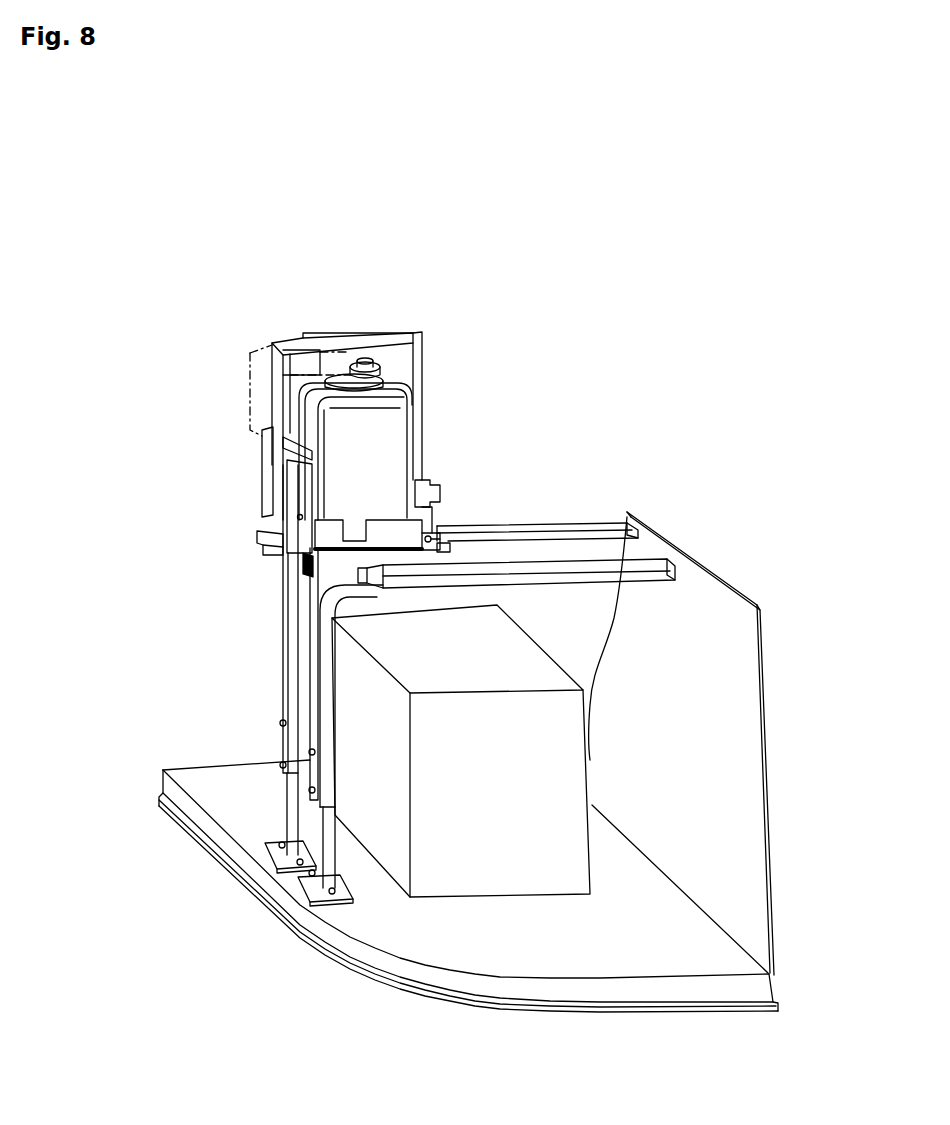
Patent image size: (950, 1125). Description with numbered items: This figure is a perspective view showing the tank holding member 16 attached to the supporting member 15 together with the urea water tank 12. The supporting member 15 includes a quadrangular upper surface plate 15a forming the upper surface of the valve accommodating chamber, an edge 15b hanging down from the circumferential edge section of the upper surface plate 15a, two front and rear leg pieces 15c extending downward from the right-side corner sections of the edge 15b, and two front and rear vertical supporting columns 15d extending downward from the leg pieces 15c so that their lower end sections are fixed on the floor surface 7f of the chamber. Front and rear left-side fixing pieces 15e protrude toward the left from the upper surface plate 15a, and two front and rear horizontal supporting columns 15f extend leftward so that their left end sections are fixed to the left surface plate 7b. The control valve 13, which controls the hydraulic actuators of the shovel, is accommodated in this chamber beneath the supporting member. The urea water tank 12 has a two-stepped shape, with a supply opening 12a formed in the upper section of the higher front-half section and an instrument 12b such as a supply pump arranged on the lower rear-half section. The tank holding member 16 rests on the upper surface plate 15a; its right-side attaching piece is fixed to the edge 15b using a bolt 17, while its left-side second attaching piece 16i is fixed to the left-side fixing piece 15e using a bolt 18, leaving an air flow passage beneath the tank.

The left surface plate 7b is at (723, 798).
The floor surface 7f is at (522, 960).
The urea water tank 12 is at (390, 420).
The supply opening 12a is at (362, 365).
The instrument 12b is at (247, 382).
The control valve 13 is at (497, 657).
The supporting member 15 is at (546, 526).
The upper surface plate 15a is at (310, 606).
The edge 15b is at (388, 557).
The leg pieces 15c is at (317, 682).
The vertical supporting columns 15d is at (318, 833).
The left-side fixing pieces 15e is at (444, 552).
The horizontal supporting columns 15f is at (555, 577).
The tank holding member 16 is at (424, 362).
The left-side second attaching piece 16i is at (440, 555).
The bolt 17 is at (265, 549).
The bolt 18 is at (443, 536).